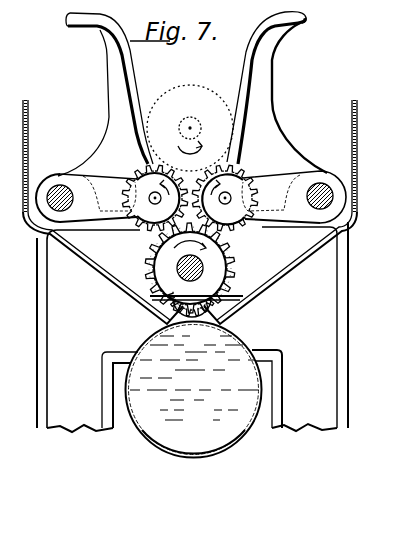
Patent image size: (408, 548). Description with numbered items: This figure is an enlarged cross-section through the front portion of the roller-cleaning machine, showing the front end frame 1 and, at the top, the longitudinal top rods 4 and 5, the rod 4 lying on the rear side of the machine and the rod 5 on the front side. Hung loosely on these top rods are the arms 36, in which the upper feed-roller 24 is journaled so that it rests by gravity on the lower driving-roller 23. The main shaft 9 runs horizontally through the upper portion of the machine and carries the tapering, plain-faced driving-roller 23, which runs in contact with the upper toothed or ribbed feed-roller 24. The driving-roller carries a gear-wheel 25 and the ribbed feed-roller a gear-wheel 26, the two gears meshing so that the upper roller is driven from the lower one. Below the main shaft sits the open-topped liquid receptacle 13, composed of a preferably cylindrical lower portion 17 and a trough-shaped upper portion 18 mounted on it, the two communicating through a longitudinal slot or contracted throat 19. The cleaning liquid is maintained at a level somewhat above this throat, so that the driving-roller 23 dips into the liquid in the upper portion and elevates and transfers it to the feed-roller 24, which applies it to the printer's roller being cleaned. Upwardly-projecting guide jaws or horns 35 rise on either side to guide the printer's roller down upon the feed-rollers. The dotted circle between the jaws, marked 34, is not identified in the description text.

The front end frame 1 is at (326, 401).
The longitudinal top rod 4 is at (53, 186).
The longitudinal top rod 5 is at (325, 184).
The main shaft 9 is at (197, 268).
The liquid receptacle 13 is at (236, 435).
The lower portion 17 is at (198, 470).
The trough-shaped upper portion 18 is at (96, 284).
The throat 19 is at (205, 331).
The driving-roller 23 is at (229, 271).
The feed-roller 24 is at (238, 237).
The gear-wheel 25 is at (152, 262).
The gear-wheel 26 is at (138, 174).
The roll 34 is at (190, 123).
The guide jaws 35 is at (249, 60).
The arms 36 is at (191, 197).